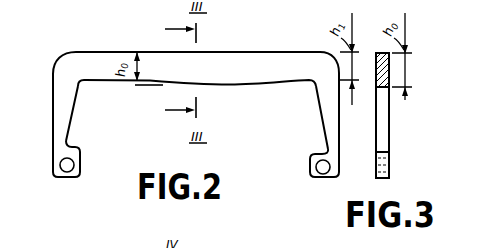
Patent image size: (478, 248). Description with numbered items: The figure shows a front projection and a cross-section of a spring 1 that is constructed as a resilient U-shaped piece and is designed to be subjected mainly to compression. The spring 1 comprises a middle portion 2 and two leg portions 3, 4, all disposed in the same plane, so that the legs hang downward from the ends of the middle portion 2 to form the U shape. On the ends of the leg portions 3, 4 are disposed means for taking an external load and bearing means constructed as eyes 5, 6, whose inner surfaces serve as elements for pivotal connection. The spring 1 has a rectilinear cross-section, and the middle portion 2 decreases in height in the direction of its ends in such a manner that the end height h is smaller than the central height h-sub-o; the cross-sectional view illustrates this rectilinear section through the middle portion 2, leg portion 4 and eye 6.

In FIG. 2, the spring 1 is at (246, 51).
In FIG. 2, the middle portion 2 is at (86, 59).
In FIG. 3, the middle portion 2 is at (377, 88).
In FIG. 2, the leg portion 3 is at (53, 96).
In FIG. 2, the leg portion 4 is at (320, 114).
In FIG. 3, the leg portion 4 is at (376, 125).
In FIG. 2, the eye 5 is at (60, 165).
In FIG. 2, the eye 6 is at (316, 167).
In FIG. 3, the eye 6 is at (376, 166).